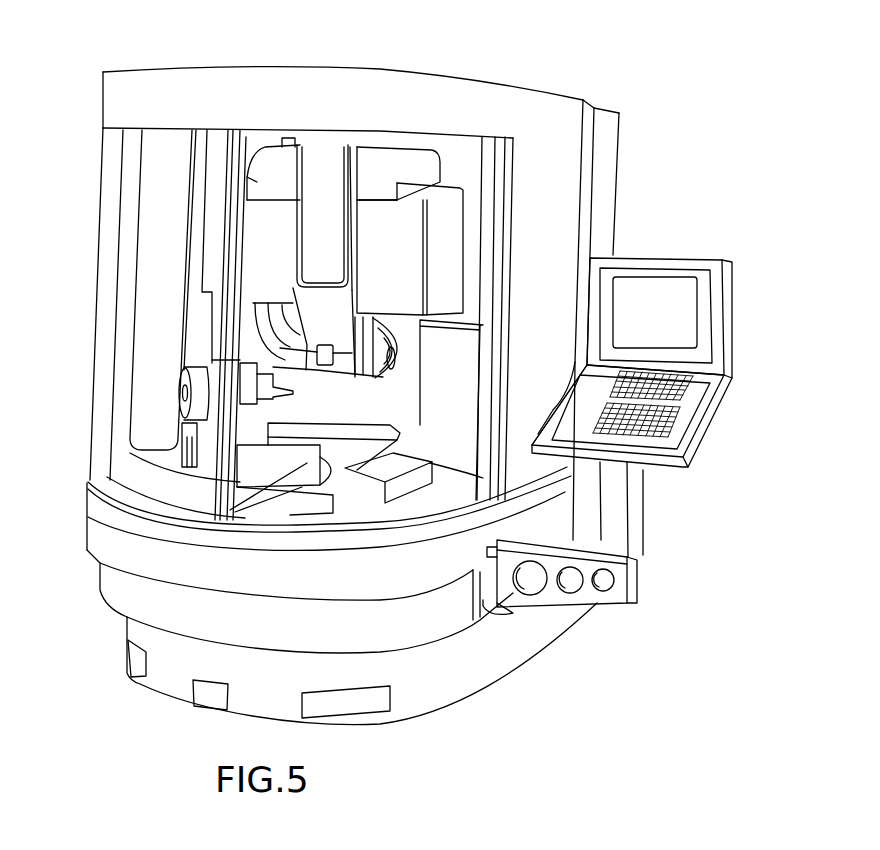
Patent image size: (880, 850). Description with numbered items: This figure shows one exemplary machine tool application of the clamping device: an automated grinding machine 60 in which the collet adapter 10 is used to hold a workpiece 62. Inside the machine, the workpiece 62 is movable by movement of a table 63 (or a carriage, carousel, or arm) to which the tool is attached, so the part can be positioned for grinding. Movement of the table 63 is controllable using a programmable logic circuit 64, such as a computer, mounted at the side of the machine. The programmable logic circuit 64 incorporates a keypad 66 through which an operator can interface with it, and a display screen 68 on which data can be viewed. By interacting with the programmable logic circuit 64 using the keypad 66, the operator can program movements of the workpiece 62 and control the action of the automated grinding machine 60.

The automated grinding machine 60 is at (463, 47).
The workpiece 62 is at (293, 393).
The collet adapter 10 is at (293, 393).
The table 63 is at (312, 490).
The programmable logic circuit 64 is at (678, 232).
The keypad 66 is at (683, 413).
The display screen 68 is at (673, 310).